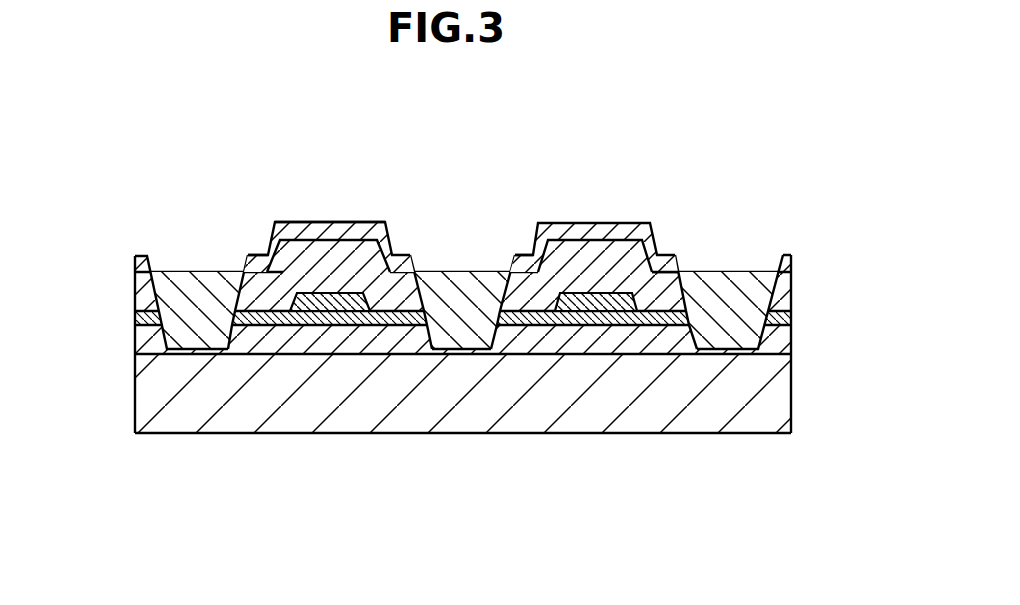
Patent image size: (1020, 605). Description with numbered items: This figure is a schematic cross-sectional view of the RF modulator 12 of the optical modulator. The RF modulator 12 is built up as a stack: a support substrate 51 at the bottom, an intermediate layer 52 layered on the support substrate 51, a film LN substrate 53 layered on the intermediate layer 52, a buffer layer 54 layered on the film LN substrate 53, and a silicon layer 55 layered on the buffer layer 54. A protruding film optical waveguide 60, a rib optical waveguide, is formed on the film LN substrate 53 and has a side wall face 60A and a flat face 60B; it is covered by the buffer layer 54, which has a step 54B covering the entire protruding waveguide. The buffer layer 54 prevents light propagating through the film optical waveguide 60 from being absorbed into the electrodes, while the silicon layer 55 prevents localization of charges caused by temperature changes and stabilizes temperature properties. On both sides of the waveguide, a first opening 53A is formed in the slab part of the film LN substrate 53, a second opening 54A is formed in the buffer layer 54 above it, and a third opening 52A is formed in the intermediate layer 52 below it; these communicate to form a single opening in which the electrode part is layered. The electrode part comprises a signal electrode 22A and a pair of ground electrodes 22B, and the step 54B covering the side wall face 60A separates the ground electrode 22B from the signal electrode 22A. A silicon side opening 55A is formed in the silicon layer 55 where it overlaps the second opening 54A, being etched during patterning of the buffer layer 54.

The RF modulator 12 is at (780, 102).
The signal electrode 22A is at (459, 292).
The ground electrode 22B is at (172, 292).
The support substrate 51 is at (779, 391).
The intermediate layer 52 is at (779, 342).
The third opening 52A is at (223, 343).
The film LN substrate 53 is at (771, 316).
The first opening 53A is at (168, 318).
The buffer layer 54 is at (781, 290).
The second opening 54A is at (180, 322).
The step 54B is at (283, 306).
The silicon layer 55 is at (305, 221).
The silicon side opening 55A is at (246, 266).
The film optical waveguide 60 is at (330, 302).
The side wall face 60A is at (333, 289).
The flat face 60B is at (287, 268).